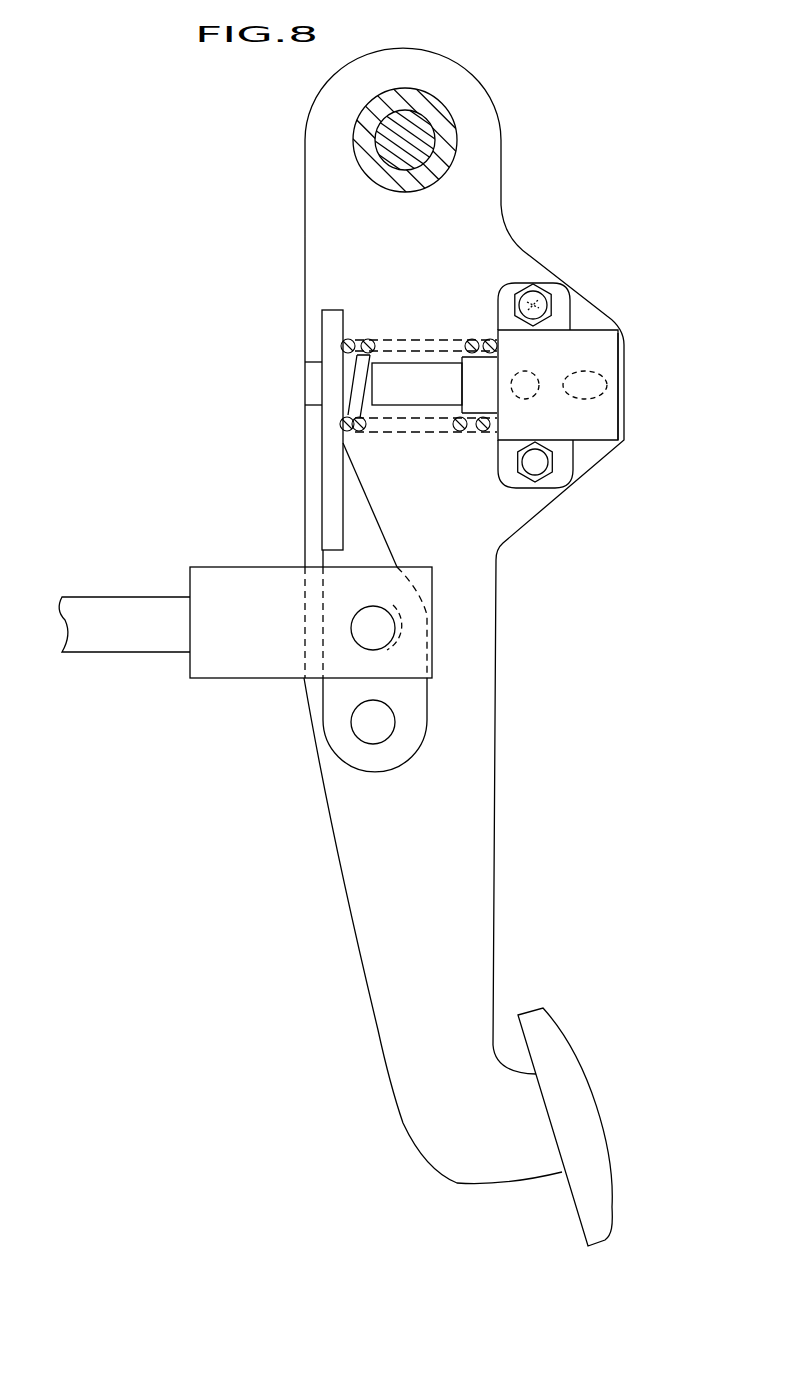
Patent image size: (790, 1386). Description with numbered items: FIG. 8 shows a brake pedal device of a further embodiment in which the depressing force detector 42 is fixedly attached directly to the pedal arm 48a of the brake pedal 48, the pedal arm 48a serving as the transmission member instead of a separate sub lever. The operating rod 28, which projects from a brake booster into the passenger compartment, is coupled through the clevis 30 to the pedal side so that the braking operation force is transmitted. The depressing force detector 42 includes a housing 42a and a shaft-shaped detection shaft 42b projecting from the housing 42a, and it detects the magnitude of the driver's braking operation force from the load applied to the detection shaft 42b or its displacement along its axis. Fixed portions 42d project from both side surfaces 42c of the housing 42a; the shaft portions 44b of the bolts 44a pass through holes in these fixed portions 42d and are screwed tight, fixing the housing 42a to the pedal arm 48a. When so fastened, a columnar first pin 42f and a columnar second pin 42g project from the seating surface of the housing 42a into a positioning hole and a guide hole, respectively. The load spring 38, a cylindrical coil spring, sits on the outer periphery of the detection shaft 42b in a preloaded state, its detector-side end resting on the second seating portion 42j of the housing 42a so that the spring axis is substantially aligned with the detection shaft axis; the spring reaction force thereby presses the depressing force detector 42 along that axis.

The operating rod 28 is at (118, 622).
The clevis 30 is at (255, 660).
The load spring 38 is at (360, 345).
The depressing force detector 42 is at (594, 316).
The housing 42a is at (622, 352).
The detection shaft 42b is at (415, 383).
The side surfaces 42c is at (563, 325).
The fixed portions 42d is at (498, 303).
The first pin 42f is at (537, 404).
The second pin 42g is at (587, 405).
The second seating portion 42j is at (478, 393).
The bolt 44a is at (549, 291).
The shaft portion 44b is at (587, 283).
The brake pedal 48 is at (500, 785).
The pedal arm 48a is at (445, 918).